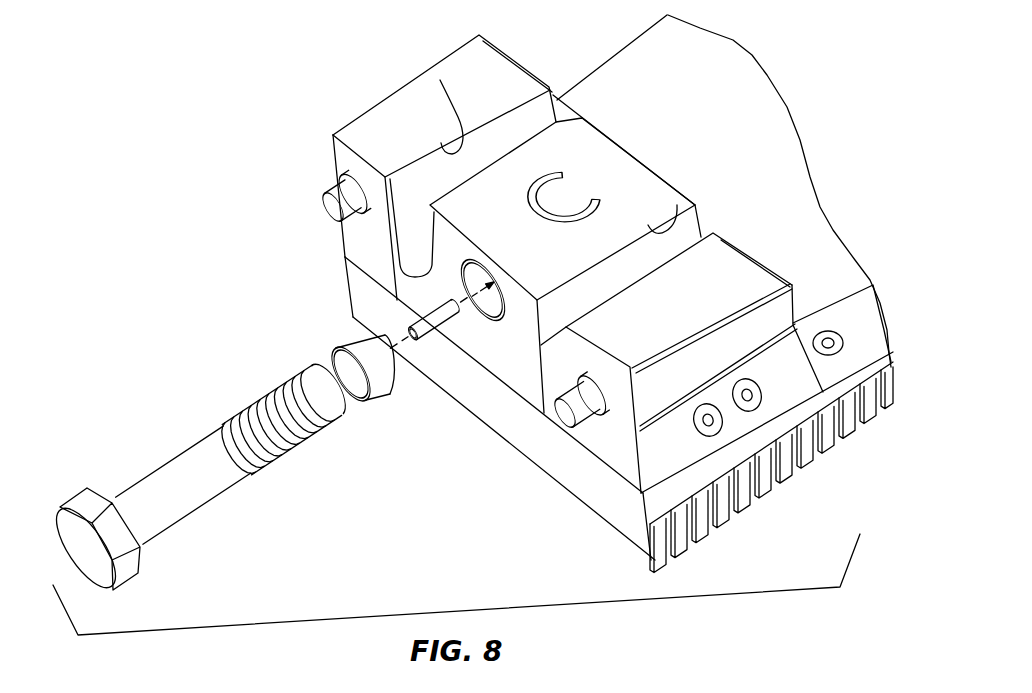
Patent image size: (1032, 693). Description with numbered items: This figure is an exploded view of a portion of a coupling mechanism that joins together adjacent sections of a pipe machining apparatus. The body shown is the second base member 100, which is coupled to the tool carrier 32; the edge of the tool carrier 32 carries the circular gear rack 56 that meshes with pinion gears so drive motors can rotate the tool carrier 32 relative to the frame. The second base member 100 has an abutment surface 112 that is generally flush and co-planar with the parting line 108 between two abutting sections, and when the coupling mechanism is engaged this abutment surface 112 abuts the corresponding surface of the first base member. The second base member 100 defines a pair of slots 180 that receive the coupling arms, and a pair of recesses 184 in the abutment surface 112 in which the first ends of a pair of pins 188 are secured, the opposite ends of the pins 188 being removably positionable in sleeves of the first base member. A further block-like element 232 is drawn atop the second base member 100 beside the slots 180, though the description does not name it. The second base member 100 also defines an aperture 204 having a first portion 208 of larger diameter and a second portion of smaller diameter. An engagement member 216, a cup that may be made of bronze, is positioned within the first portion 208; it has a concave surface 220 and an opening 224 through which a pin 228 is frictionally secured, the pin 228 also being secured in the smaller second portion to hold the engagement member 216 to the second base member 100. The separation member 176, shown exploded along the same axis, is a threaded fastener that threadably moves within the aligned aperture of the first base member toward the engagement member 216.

The tool carrier 32 is at (593, 515).
The circular gear rack 56 is at (775, 494).
The second base member 100 is at (343, 132).
The parting line 108 is at (343, 244).
The abutment surface 112 is at (343, 158).
The separation member 176 is at (128, 470).
The slots 180 is at (440, 80).
The recesses 184 is at (362, 187).
The pins 188 is at (309, 213).
The aperture 204 is at (503, 322).
The first portion 208 is at (470, 260).
The engagement member 216 is at (383, 390).
The concave surface 220 is at (333, 365).
The opening 224 is at (350, 394).
The pin 228 is at (432, 340).
The wedge 232 is at (533, 70).